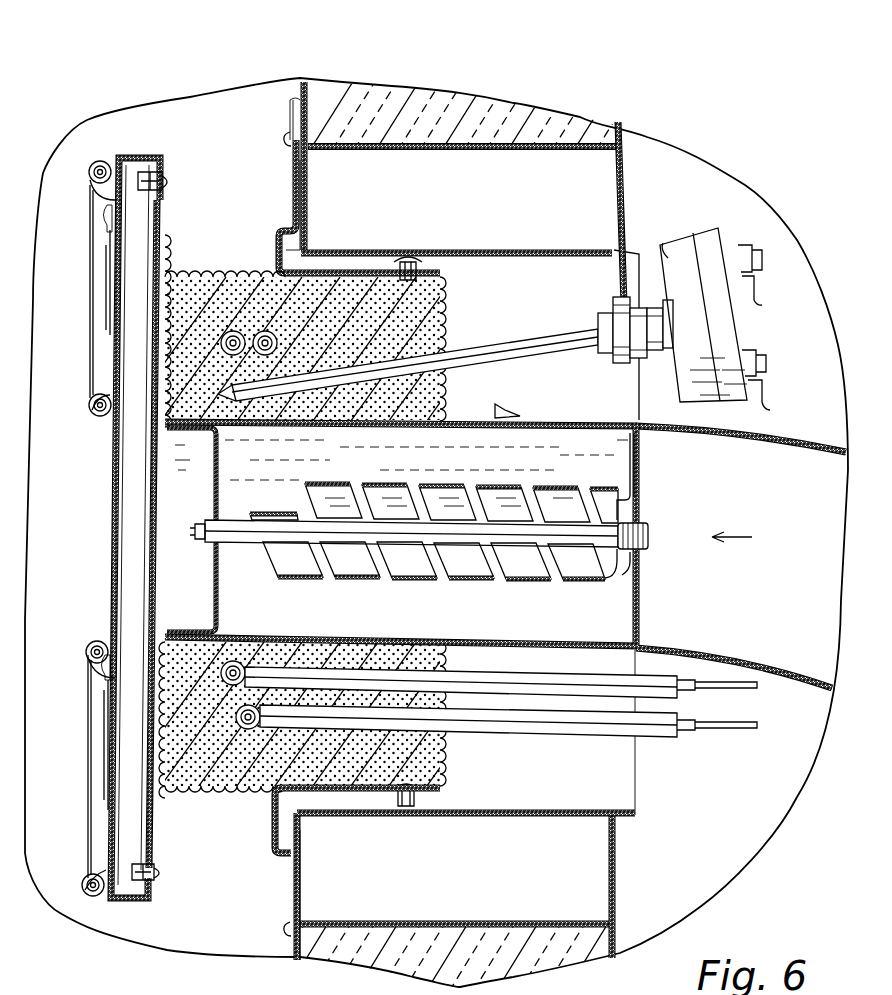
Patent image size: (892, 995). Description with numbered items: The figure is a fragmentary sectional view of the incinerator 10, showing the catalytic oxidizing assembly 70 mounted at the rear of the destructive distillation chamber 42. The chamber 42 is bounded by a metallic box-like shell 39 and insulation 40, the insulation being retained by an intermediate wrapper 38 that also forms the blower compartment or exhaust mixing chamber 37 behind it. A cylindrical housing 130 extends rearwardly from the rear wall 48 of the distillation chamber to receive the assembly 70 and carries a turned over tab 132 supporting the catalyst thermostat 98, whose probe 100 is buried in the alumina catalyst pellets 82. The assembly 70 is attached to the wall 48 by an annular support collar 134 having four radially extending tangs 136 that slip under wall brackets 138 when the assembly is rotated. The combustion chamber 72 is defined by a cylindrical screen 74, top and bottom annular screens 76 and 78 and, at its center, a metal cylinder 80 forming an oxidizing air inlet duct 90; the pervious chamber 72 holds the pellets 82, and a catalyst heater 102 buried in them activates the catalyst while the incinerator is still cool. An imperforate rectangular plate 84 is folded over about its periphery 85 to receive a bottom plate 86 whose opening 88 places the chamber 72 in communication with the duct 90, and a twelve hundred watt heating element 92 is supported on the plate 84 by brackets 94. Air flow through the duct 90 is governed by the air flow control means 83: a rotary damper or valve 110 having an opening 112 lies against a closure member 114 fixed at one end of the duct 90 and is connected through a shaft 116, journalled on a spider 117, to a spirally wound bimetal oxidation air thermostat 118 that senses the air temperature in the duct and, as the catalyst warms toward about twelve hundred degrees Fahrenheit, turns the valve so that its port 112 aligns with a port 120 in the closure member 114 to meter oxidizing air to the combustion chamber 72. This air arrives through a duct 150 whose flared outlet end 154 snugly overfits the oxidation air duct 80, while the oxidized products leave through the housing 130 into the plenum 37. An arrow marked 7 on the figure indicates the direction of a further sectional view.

The incinerator 10 is at (192, 97).
The blower compartment 37 is at (711, 810).
The intermediate wrapper 38 is at (622, 145).
The metallic box-like shell 39 is at (300, 85).
The insulation 40 is at (452, 110).
The destructive distillation chamber 42 is at (45, 503).
The rear wall 48 is at (292, 112).
The catalytic oxidizing assembly 70 is at (140, 155).
The combustion chamber 72 is at (328, 333).
The cylindrical screen 74 is at (270, 275).
The top annular screen 76 is at (170, 258).
The bottom annular screen 78 is at (440, 755).
The metal cylinder 80 is at (473, 420).
The alumina pellets 82 is at (412, 772).
The air flow control means 83 is at (655, 528).
The imperforate rectangular plate 84 is at (117, 257).
The periphery 85 is at (124, 904).
The bottom plate 86 is at (156, 833).
The opening 88 is at (150, 850).
The oxidizing air inlet duct 90 is at (371, 631).
The heating element 92 is at (92, 297).
The brackets 94 is at (100, 680).
The catalyst thermostat 98 is at (668, 245).
The probe 100 is at (440, 358).
The catalyst heater 102 is at (265, 332).
The rotary damper 110 is at (640, 450).
The opening 112 is at (640, 605).
The closure member 114 is at (628, 441).
The shaft 116 is at (246, 520).
The spider 117 is at (212, 600).
The oxidation air thermostat 118 is at (525, 572).
The port 120 is at (628, 470).
The cylindrical housing 130 is at (522, 250).
The turned over tab 132 is at (615, 283).
The annular support collar 134 is at (277, 812).
The tangs 136 is at (296, 177).
The wall brackets 138 is at (283, 137).
The duct 150 is at (818, 440).
The flared outlet end 154 is at (498, 412).
The section line for FIG. 7 is at (747, 546).